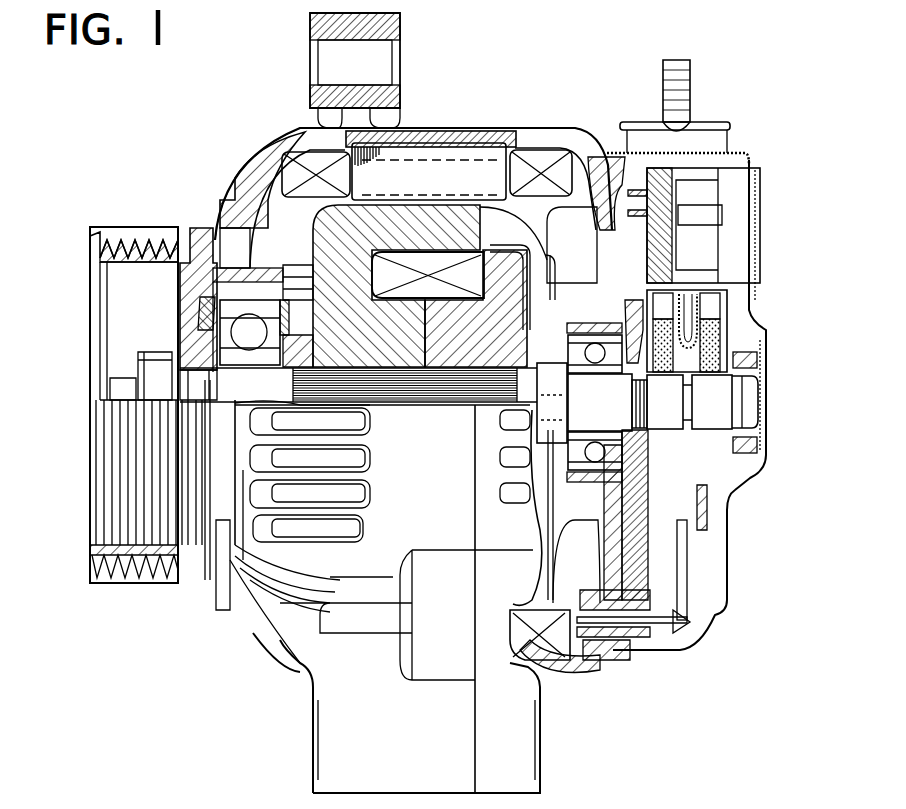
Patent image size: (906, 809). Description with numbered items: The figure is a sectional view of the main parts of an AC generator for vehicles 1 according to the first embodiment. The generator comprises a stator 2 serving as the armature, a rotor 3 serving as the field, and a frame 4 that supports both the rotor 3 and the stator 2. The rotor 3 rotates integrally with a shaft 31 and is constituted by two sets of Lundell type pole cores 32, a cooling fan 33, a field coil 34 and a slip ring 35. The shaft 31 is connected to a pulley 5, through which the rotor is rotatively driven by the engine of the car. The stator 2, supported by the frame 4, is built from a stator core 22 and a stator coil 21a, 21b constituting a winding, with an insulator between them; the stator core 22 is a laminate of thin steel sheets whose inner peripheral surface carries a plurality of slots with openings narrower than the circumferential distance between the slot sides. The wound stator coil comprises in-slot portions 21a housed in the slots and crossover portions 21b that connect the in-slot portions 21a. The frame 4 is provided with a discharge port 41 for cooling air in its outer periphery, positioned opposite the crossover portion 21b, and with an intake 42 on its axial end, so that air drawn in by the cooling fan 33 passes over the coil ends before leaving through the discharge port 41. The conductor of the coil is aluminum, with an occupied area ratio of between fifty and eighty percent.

The AC generator for vehicles 1 is at (493, 52).
The stator 2 is at (530, 161).
The rotor 3 is at (568, 295).
The frame 4 is at (237, 244).
The pulley 5 is at (194, 250).
The in-slot portion 21a is at (478, 170).
The crossover portion 21b is at (288, 175).
The stator core 22 is at (405, 151).
The shaft 31 is at (210, 383).
The Lundell type pole cores 32 is at (447, 357).
The cooling fan 33 is at (280, 221).
The field coil 34 is at (417, 263).
The slip ring 35 is at (706, 430).
The discharge port 41 is at (293, 140).
The intake 42 is at (219, 262).